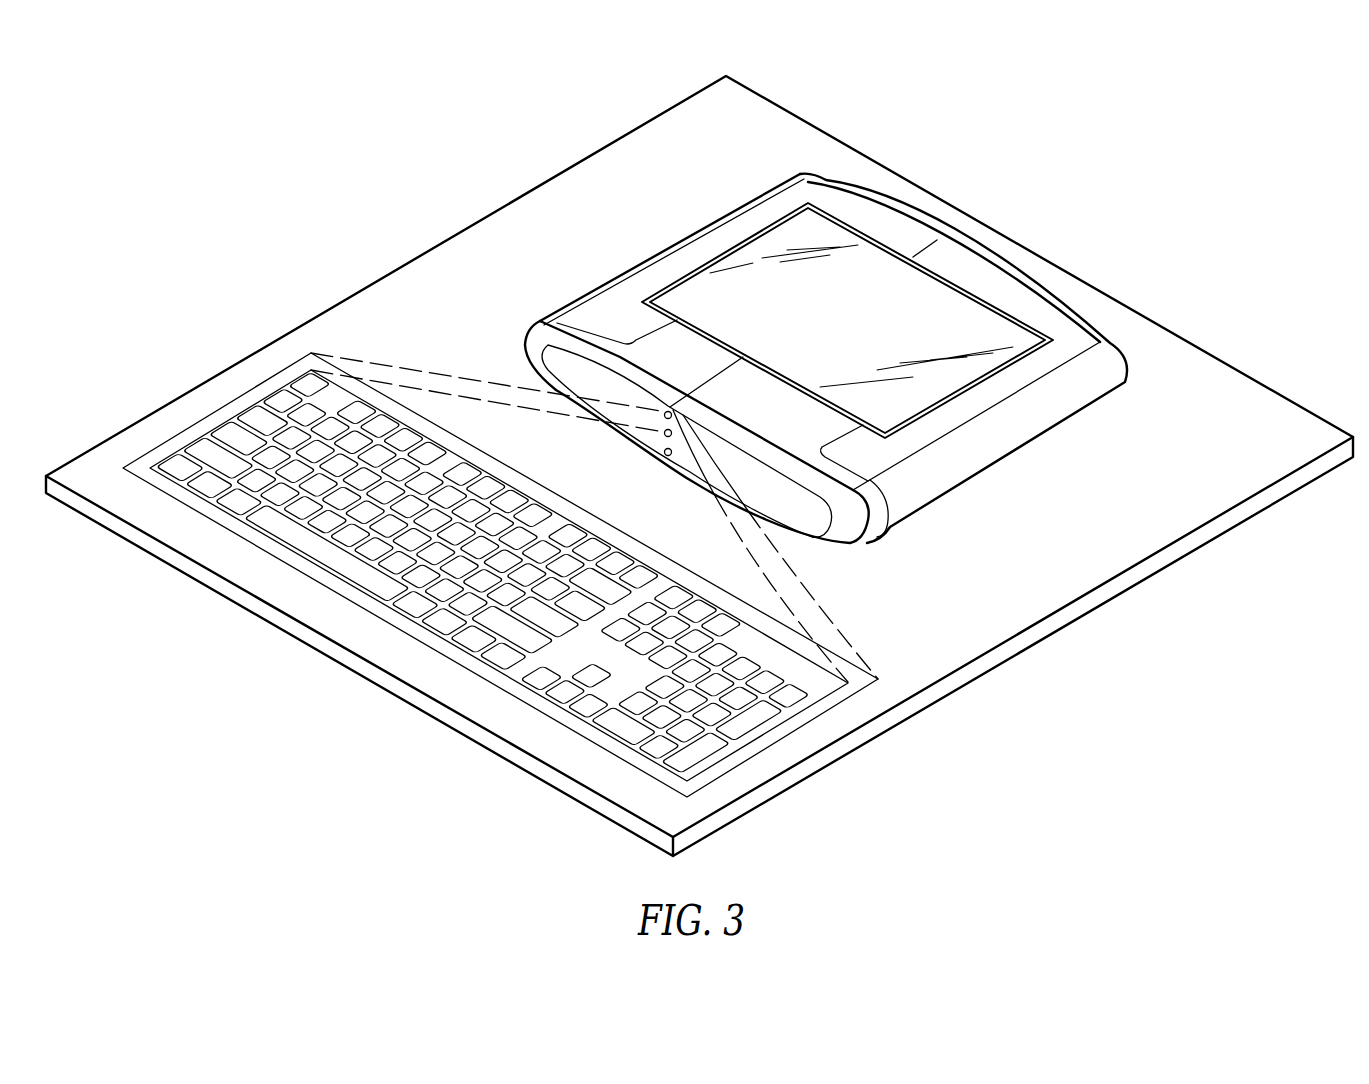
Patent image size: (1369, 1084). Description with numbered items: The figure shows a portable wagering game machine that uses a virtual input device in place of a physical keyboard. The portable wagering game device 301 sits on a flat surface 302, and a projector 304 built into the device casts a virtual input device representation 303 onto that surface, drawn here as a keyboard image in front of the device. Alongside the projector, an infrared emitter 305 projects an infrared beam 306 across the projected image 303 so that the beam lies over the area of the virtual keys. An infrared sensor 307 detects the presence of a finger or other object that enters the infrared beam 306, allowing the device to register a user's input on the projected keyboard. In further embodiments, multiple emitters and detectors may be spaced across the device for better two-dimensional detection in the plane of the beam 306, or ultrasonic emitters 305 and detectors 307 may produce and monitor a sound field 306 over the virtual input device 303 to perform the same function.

The portable wagering game device 301 is at (724, 233).
The flat surface 302 is at (538, 206).
The virtual input device representation 303 is at (232, 412).
The projector 304 is at (665, 413).
The infrared emitter 305 is at (666, 455).
The infrared beam 306 is at (790, 603).
The infrared sensor 307 is at (664, 434).